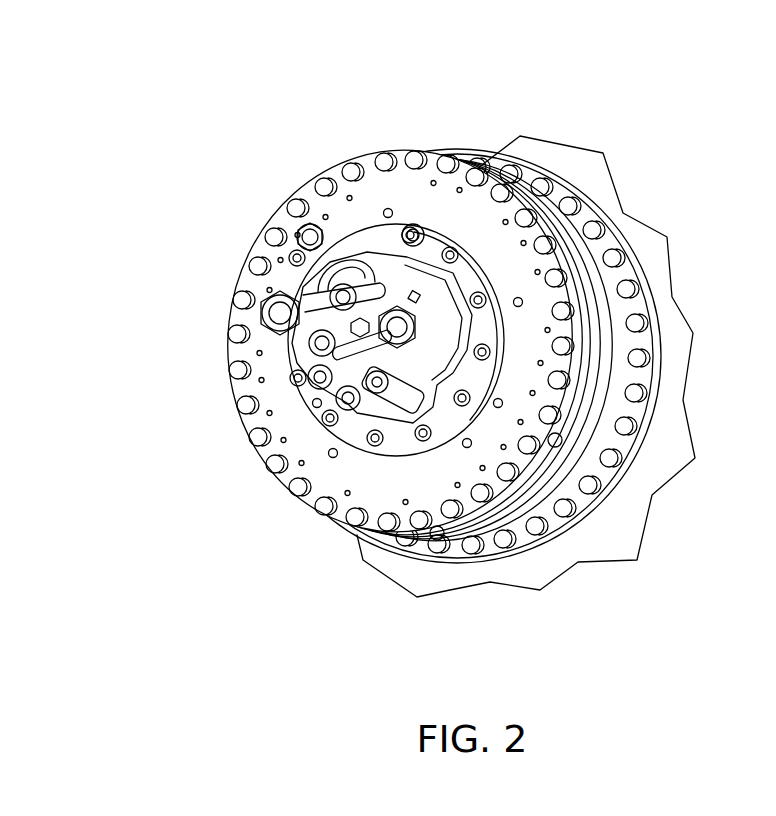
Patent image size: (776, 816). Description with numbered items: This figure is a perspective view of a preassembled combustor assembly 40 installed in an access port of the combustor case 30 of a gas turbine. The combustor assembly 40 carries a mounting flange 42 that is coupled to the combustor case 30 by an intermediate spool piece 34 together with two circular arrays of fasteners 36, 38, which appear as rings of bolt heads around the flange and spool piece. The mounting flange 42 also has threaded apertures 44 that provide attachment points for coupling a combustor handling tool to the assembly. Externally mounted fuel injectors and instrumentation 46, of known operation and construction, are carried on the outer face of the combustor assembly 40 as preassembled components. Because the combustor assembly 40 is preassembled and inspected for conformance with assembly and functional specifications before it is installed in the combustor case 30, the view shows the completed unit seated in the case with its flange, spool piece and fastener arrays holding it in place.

The combustor case 30 is at (635, 515).
The intermediate spool piece 34 is at (582, 262).
The fasteners 36 is at (605, 455).
The fasteners 38 is at (562, 342).
The combustor assembly 40 is at (474, 128).
The mounting flange 42 is at (490, 242).
The threaded apertures 44 is at (438, 535).
The fuel injectors and instrumentation 46 is at (411, 412).